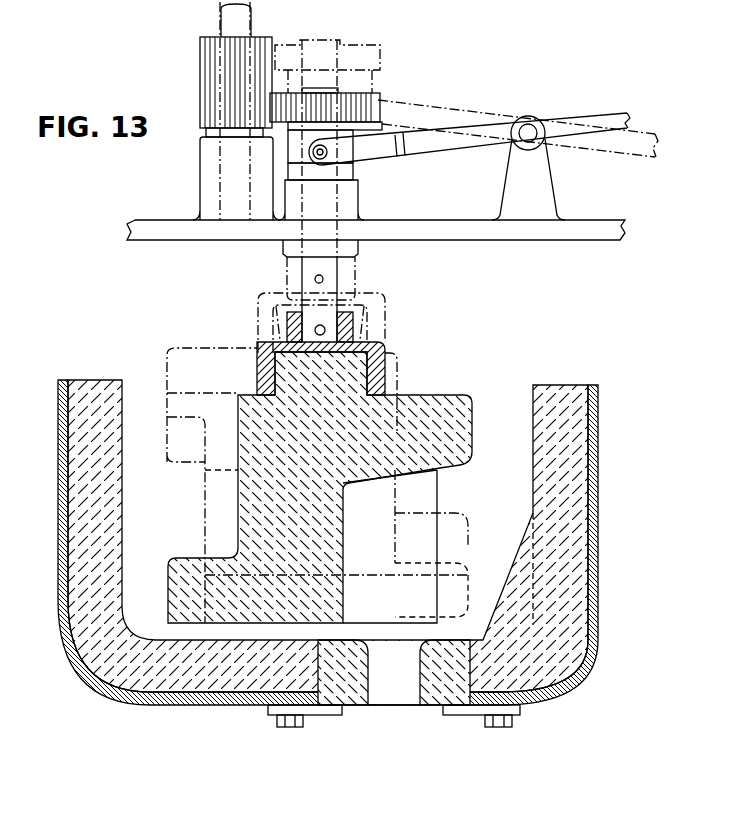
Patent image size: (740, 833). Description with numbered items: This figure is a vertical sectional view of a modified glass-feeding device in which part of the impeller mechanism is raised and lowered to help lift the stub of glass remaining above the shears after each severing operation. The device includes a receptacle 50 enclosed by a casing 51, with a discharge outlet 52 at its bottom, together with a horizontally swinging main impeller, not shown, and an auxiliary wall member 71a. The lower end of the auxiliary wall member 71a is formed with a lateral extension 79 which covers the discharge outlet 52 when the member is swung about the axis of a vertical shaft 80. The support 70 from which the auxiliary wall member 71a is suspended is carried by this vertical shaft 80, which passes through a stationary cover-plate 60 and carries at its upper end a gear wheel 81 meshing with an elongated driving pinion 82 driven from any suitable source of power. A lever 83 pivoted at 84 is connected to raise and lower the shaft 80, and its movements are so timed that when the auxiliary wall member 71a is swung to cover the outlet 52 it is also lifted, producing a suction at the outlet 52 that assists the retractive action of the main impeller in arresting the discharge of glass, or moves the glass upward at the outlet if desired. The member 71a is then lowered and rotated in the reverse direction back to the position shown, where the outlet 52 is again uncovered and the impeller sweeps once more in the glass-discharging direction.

The receptacle 50 is at (572, 497).
The casing 51 is at (598, 558).
The discharge outlet 52 is at (389, 693).
The stationary cover-plate 60 is at (460, 240).
The support 70 is at (386, 362).
The auxiliary wall member 71a is at (262, 510).
The lateral extension 79 is at (186, 590).
The vertical shaft 80 is at (340, 278).
The gear wheel 81 is at (374, 95).
The elongated driving pinion 82 is at (204, 72).
The lever 83 is at (437, 148).
The pivot 84 is at (528, 124).